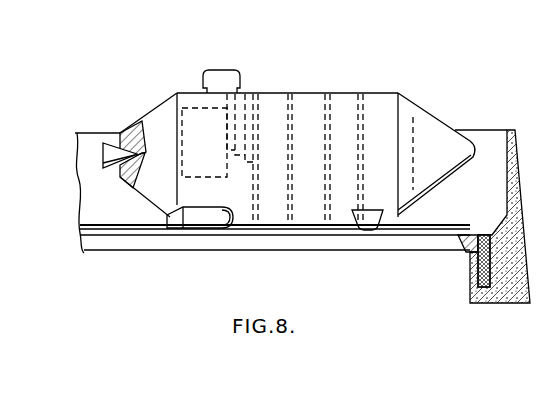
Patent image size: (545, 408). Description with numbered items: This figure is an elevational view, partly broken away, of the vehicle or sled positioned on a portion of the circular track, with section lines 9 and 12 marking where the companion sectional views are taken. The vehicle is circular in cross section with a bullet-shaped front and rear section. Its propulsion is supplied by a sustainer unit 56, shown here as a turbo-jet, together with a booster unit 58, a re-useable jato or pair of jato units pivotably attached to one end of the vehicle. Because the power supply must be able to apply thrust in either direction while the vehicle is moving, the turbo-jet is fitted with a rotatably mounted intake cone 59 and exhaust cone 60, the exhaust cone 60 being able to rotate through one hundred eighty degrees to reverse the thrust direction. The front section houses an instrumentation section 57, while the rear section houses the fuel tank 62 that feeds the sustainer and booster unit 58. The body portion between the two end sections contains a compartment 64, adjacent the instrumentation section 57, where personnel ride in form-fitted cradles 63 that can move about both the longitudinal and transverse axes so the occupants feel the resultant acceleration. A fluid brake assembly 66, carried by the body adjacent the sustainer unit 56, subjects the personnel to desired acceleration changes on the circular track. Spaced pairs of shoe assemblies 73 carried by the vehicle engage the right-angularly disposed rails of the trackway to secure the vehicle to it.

The sustainer unit 56 is at (176, 240).
The instrumentation section 57 is at (401, 172).
The booster unit 58 is at (116, 148).
The intake cone 59 is at (210, 70).
The exhaust cone 60 is at (170, 219).
The fuel tank 62 is at (188, 163).
The form-fitted cradles 63 is at (283, 180).
The compartment 64 is at (312, 86).
The fluid brake assembly 66 is at (244, 126).
The shoe assemblies 73 is at (358, 240).
The section line 9 is at (250, 93).
The section line 12 is at (320, 120).